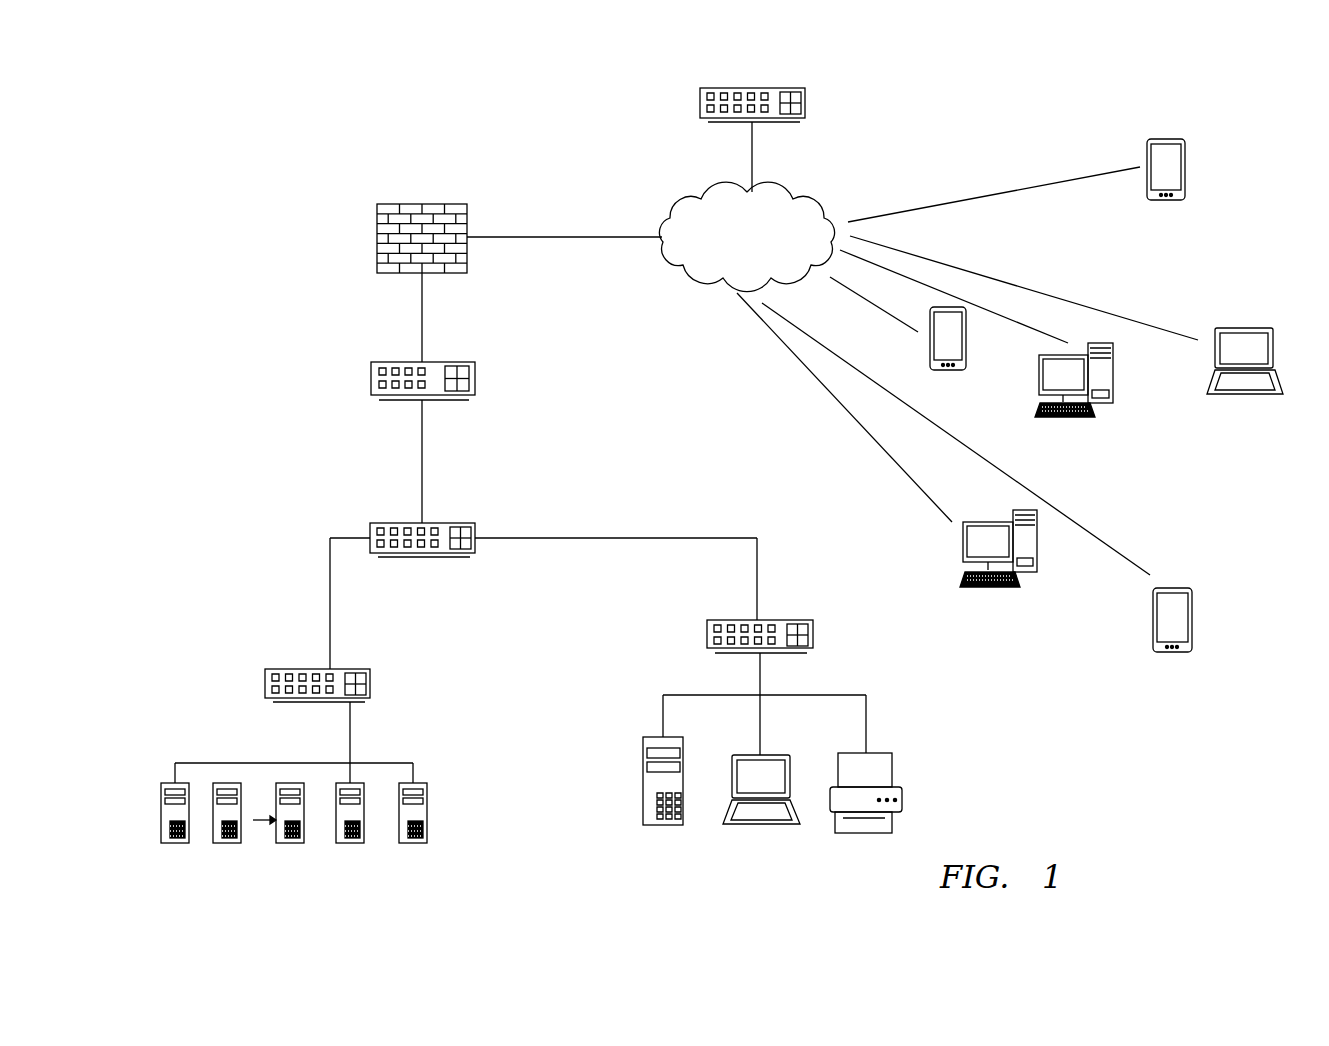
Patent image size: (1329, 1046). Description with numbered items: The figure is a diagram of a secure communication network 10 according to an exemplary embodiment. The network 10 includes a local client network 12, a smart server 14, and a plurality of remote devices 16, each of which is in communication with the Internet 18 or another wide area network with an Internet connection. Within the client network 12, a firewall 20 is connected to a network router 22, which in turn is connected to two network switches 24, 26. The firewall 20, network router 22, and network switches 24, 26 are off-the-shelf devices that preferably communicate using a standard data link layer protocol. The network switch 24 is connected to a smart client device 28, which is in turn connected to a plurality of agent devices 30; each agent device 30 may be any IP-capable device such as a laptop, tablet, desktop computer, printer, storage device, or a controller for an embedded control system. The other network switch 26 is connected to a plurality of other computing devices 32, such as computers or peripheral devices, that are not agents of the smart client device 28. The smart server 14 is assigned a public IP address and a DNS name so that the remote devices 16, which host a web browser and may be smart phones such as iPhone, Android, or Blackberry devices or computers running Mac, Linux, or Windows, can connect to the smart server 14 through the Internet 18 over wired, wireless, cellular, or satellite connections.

The secure communication network 10 is at (948, 150).
The local client network 12 is at (267, 418).
The smart server 14 is at (700, 106).
The remote devices 16 is at (1210, 512).
The Internet 18 is at (712, 273).
The firewall 20 is at (422, 204).
The network router 22 is at (475, 362).
The network switch 24 is at (466, 523).
The network switch 26 is at (787, 620).
The smart client device 28 is at (370, 672).
The agent devices 30 is at (325, 895).
The other computing devices 32 is at (905, 750).